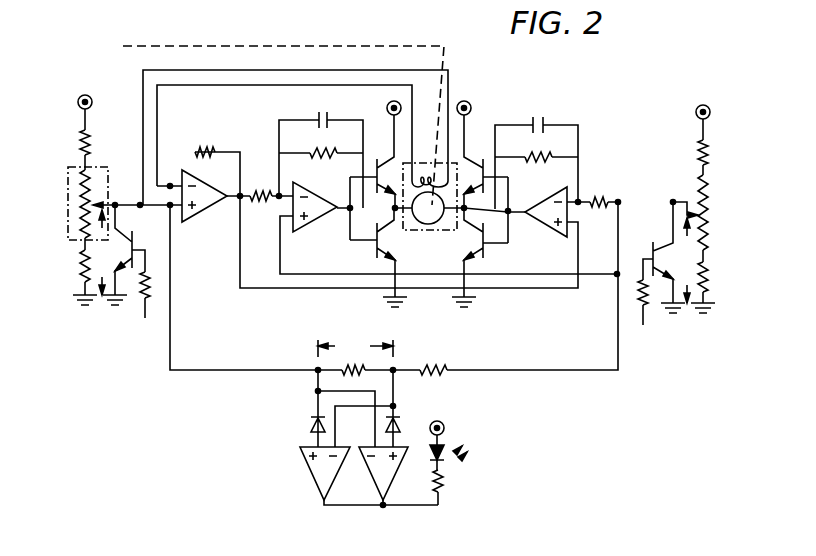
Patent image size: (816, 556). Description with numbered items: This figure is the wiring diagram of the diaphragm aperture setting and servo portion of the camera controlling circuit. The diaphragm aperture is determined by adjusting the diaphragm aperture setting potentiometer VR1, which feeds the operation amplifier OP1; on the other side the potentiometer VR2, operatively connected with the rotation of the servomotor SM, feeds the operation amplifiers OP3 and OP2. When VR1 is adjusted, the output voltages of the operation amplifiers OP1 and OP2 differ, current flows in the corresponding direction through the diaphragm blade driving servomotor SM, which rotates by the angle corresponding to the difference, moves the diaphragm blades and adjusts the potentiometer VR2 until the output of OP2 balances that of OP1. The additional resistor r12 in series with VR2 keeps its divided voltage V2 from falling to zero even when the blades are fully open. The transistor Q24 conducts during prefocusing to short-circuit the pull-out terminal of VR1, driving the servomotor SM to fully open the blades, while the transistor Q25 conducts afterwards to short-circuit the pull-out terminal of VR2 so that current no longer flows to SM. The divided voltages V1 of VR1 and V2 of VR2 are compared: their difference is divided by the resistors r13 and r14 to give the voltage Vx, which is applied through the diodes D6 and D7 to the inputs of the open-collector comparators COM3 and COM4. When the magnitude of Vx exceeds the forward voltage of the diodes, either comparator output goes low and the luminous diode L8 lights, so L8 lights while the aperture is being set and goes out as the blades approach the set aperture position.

The potentiometer VR2 is at (65, 167).
The additional resistor r12 is at (76, 272).
The divided voltage V2 is at (101, 252).
The transistor Q25 is at (134, 274).
The operation amplifier OP3 is at (231, 196).
The operation amplifier OP2 is at (320, 182).
The diaphragm blade driving servomotor SM is at (430, 207).
The operation amplifier OP1 is at (541, 187).
The transistor Q24 is at (654, 277).
The divided voltage V1 is at (687, 260).
The diaphragm aperture setting potentiometer VR1 is at (710, 209).
The voltage Vx is at (355, 350).
The resistor r13 is at (367, 379).
The resistor r14 is at (443, 379).
The diode D6 is at (305, 408).
The diode D7 is at (404, 408).
The comparator COM3 is at (310, 471).
The comparator COM4 is at (376, 478).
The luminous diode L8 is at (448, 463).